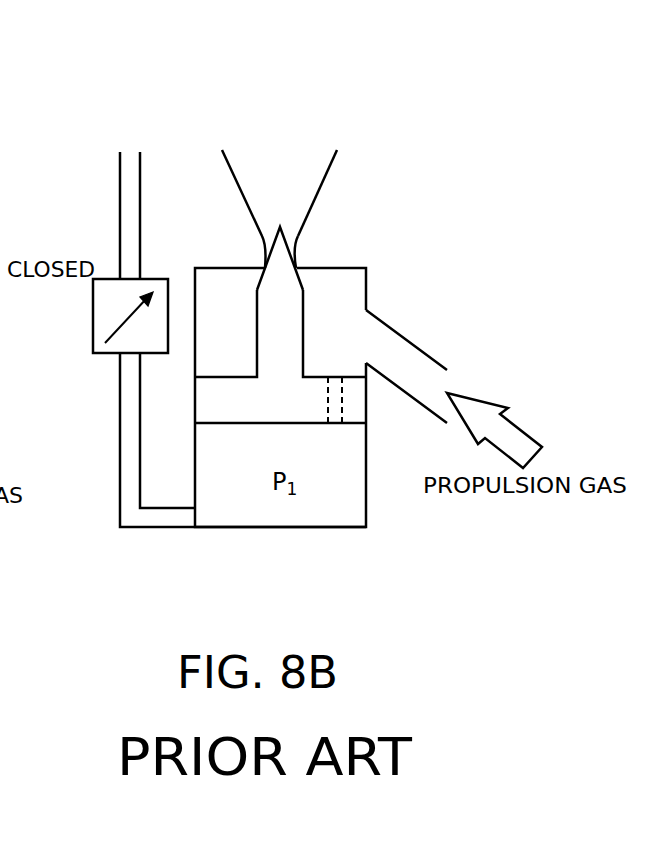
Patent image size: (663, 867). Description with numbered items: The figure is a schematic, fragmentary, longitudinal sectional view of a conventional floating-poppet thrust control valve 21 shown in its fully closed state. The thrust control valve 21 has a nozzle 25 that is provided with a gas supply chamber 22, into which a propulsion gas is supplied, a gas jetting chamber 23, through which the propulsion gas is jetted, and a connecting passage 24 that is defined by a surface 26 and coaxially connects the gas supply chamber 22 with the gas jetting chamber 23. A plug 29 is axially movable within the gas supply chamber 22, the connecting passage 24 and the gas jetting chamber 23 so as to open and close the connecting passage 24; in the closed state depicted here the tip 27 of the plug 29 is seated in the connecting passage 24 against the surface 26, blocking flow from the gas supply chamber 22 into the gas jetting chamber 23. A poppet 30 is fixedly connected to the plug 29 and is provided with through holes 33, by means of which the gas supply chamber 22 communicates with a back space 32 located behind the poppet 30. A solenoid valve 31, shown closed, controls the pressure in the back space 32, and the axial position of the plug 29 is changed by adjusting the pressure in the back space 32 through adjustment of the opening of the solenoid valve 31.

The floating-poppet thrust control valve 21 is at (384, 106).
The gas supply chamber 22 is at (355, 282).
The gas jetting chamber 23 is at (318, 163).
The connecting passage 24 is at (291, 232).
The nozzle 25 is at (393, 313).
The surface 26 is at (304, 284).
The needle tip 27 is at (270, 238).
The plug 29 is at (277, 281).
The poppet 30 is at (230, 408).
The solenoid valve 31 is at (93, 330).
The back space 32 is at (348, 510).
The through holes 33 is at (330, 424).